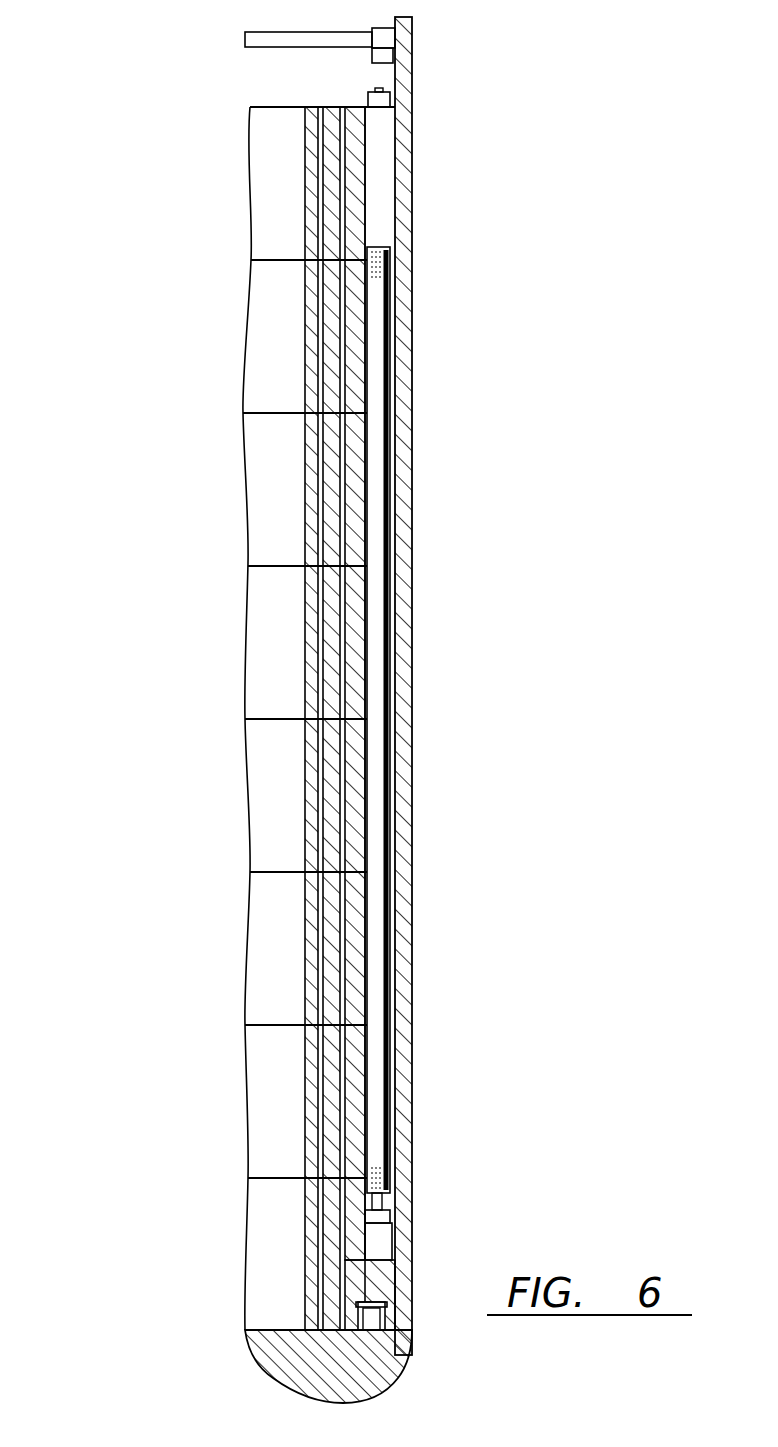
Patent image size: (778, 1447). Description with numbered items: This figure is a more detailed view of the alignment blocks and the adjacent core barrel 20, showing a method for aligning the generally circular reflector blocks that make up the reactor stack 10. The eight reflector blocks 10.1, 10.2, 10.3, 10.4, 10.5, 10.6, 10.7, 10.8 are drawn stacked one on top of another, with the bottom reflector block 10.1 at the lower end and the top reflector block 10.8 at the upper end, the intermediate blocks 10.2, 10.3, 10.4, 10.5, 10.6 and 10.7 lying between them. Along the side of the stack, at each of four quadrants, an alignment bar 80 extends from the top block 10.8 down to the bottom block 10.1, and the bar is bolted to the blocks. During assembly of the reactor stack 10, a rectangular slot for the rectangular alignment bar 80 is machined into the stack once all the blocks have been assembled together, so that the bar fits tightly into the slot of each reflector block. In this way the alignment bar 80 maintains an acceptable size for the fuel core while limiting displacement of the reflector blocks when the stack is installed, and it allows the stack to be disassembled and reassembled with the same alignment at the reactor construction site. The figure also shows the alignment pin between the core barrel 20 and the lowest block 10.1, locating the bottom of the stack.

The reactor stack 10 is at (205, 390).
The bottom reflector block 10.1 is at (237, 1263).
The reflector block 10.2 is at (237, 1106).
The reflector block 10.3 is at (237, 952).
The reflector block 10.4 is at (237, 800).
The reflector block 10.5 is at (237, 651).
The reflector block 10.6 is at (237, 492).
The reflector block 10.7 is at (227, 337).
The top reflector block 10.8 is at (243, 190).
The alignment bar 80 is at (412, 580).
The core barrel 20 is at (395, 1374).